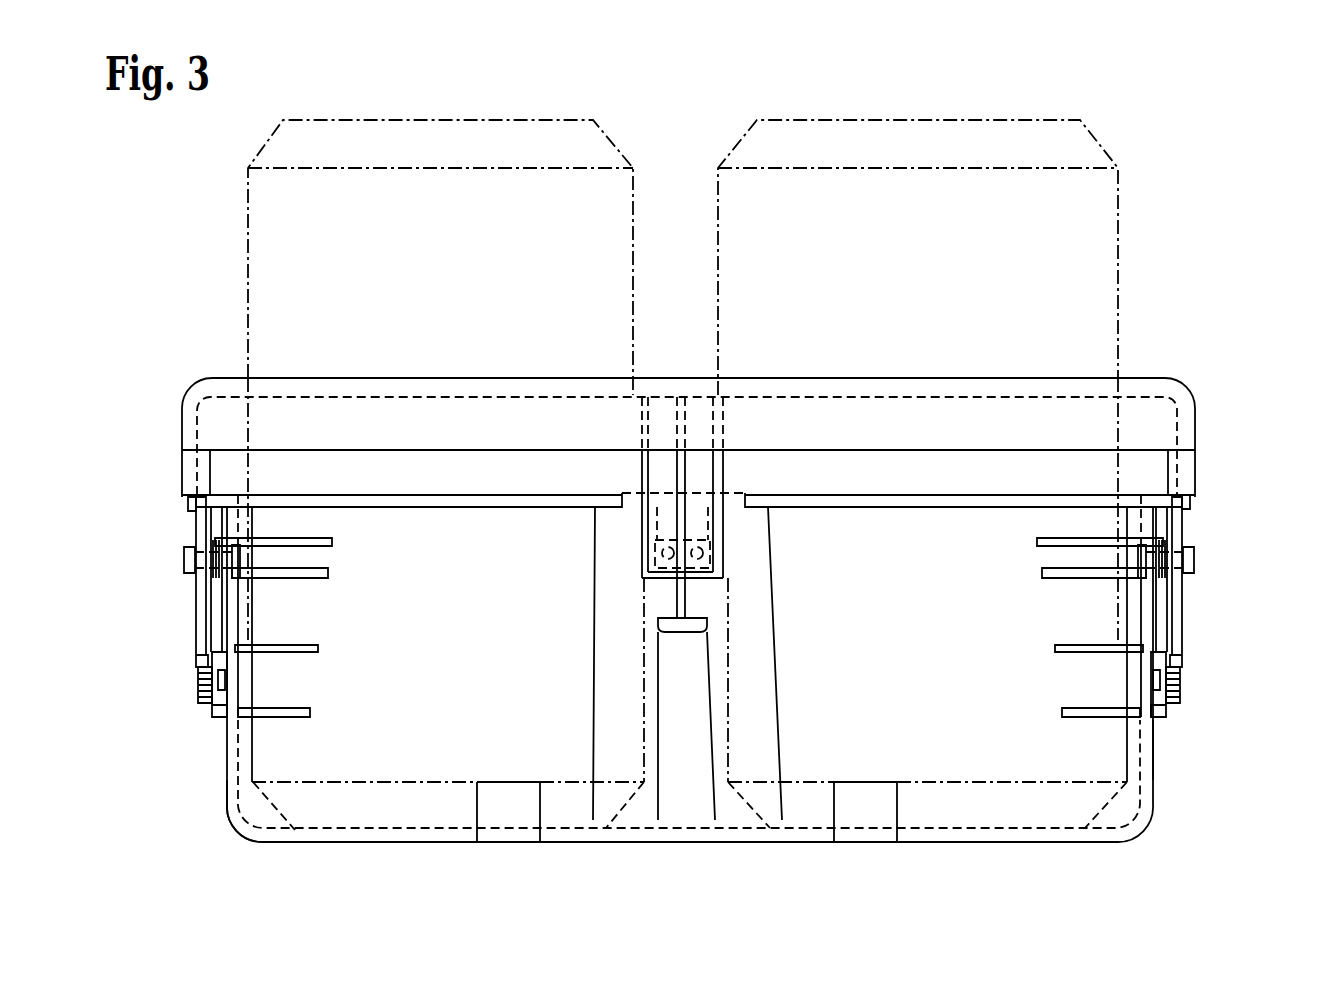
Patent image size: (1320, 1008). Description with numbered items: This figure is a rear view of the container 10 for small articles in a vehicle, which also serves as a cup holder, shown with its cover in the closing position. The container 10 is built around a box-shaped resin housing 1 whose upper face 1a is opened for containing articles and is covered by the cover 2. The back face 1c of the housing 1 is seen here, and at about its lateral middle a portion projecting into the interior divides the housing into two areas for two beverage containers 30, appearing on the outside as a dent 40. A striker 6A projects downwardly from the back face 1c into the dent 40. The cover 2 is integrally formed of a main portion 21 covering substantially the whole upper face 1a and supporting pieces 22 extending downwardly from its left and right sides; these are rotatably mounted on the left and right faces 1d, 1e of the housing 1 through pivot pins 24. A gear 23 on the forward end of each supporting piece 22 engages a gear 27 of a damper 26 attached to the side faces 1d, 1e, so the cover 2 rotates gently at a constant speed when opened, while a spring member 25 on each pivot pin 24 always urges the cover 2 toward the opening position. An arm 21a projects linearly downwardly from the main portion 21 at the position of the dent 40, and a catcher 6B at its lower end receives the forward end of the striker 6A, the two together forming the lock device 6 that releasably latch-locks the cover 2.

The housing 1 is at (1155, 777).
The upper face 1a is at (1085, 488).
The back face 1c is at (410, 833).
The left face 1d is at (232, 787).
The right face 1e is at (1155, 747).
The cover 2 is at (1160, 378).
The lock device 6 is at (345, 237).
The striker 6A is at (657, 515).
The catcher 6B is at (668, 617).
The container 10 is at (1160, 328).
The main portion 21 is at (912, 384).
The arm 21a is at (700, 476).
The supporting piece 22 is at (197, 625).
The gear 23 is at (200, 680).
The pivot pin 24 is at (182, 558).
The spring member 25 is at (217, 540).
The damper 26 is at (211, 716).
The gear for damper 27 is at (200, 700).
The beverage container 30 is at (488, 138).
The dent 40 is at (672, 790).